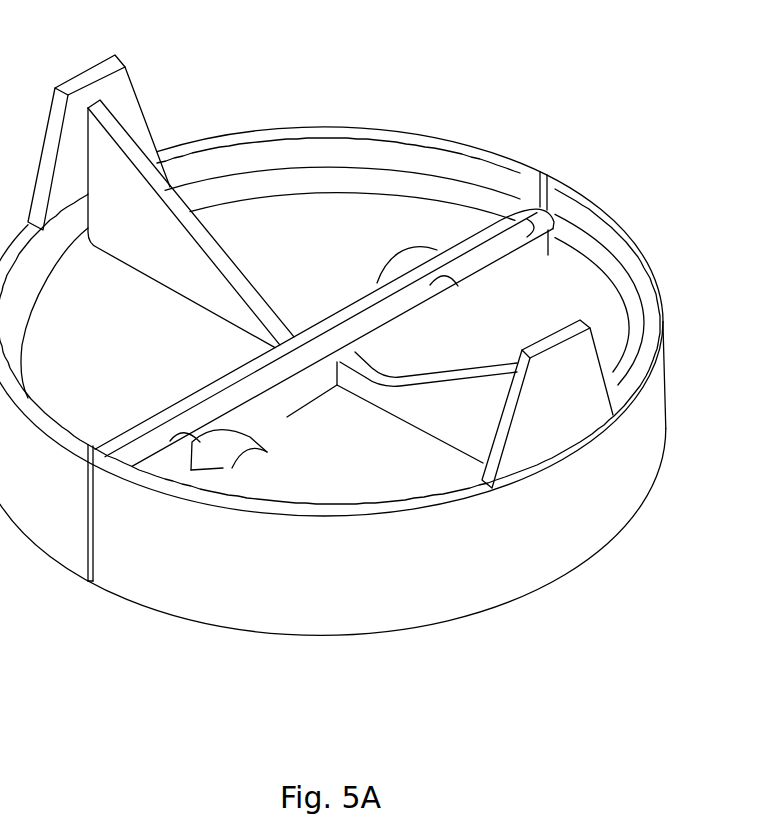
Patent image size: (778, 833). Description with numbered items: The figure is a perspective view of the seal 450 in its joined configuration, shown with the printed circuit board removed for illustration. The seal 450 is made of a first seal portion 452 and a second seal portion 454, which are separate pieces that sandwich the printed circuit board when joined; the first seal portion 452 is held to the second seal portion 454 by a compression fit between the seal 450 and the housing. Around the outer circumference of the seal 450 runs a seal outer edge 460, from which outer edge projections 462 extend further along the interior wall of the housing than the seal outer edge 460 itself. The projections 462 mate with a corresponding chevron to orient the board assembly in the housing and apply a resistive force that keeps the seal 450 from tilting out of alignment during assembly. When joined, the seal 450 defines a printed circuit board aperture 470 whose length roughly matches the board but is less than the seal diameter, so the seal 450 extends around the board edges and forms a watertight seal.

The seal 450 is at (669, 41).
The first seal portion 452 is at (676, 327).
The second seal portion 454 is at (429, 129).
The seal outer edge 460 is at (608, 208).
The outer edge projections 462 is at (113, 55).
The printed circuit board aperture 470 is at (348, 332).